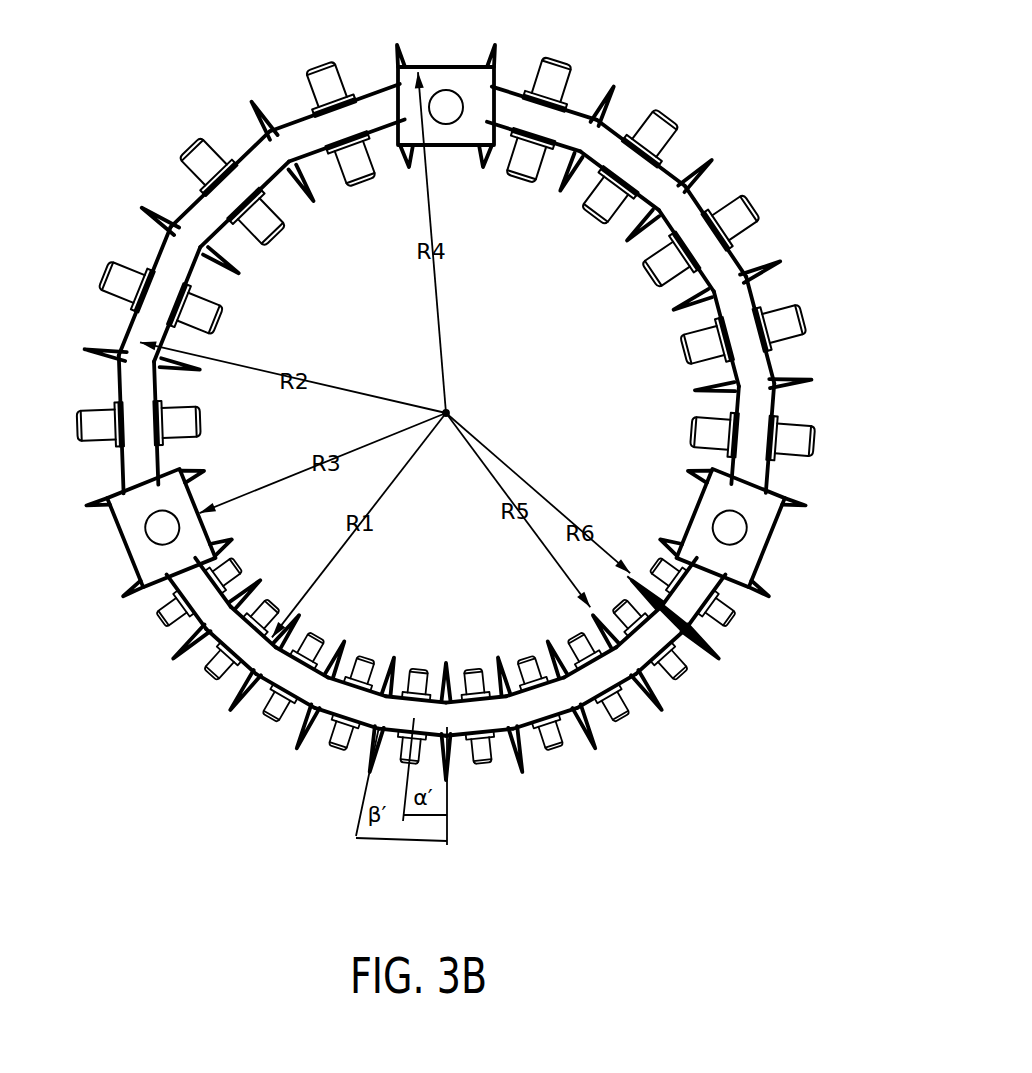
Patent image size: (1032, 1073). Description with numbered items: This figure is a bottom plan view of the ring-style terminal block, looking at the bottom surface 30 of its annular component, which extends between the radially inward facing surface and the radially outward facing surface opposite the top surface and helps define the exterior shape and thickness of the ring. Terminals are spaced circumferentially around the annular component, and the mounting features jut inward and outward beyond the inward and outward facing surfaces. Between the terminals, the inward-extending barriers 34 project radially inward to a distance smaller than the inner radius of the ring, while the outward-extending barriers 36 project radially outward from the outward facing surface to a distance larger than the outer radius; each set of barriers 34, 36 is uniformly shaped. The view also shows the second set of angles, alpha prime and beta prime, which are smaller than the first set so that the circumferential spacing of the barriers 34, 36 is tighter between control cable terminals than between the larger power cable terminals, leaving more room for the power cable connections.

The bottom surface 30 is at (764, 378).
The barriers 34 is at (626, 233).
The barriers 36 is at (308, 767).